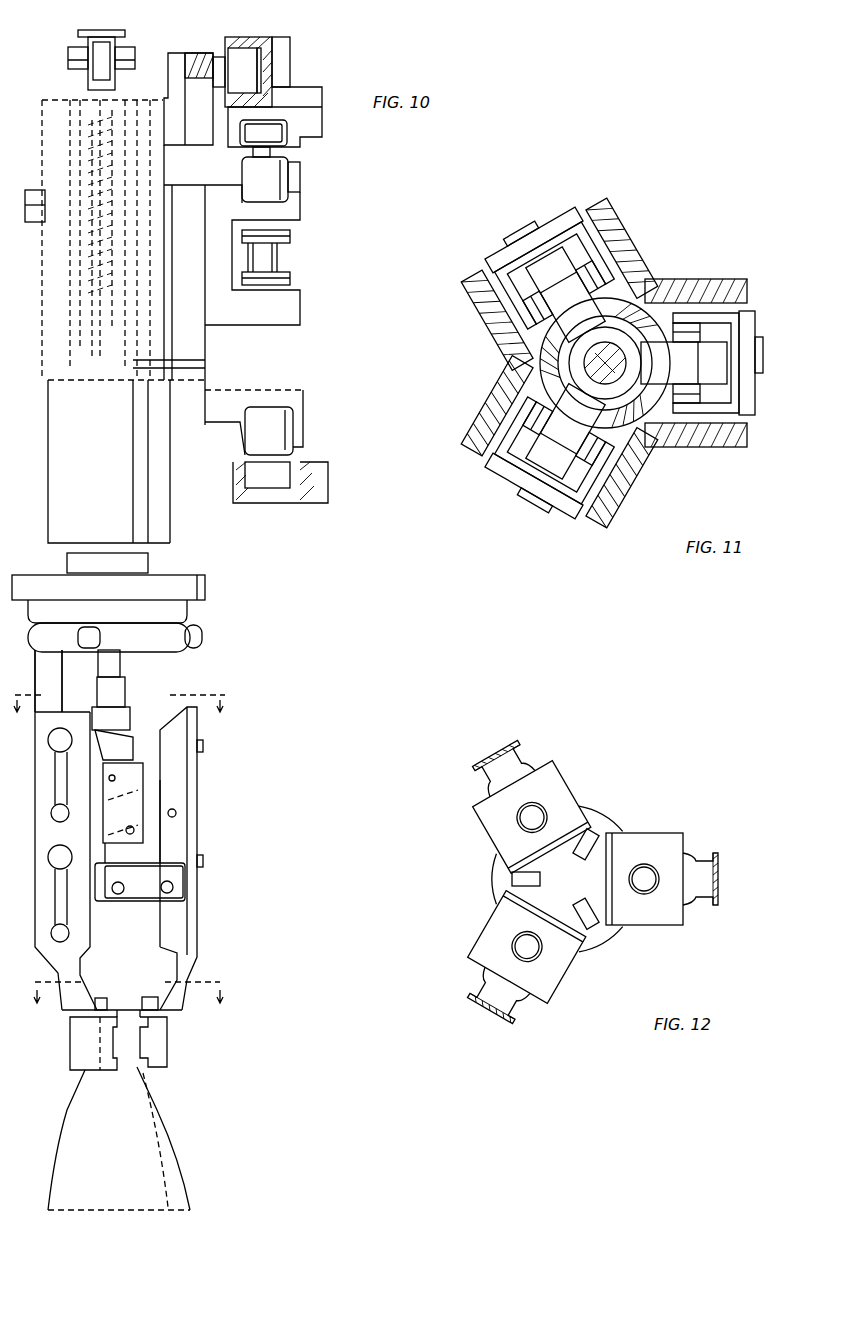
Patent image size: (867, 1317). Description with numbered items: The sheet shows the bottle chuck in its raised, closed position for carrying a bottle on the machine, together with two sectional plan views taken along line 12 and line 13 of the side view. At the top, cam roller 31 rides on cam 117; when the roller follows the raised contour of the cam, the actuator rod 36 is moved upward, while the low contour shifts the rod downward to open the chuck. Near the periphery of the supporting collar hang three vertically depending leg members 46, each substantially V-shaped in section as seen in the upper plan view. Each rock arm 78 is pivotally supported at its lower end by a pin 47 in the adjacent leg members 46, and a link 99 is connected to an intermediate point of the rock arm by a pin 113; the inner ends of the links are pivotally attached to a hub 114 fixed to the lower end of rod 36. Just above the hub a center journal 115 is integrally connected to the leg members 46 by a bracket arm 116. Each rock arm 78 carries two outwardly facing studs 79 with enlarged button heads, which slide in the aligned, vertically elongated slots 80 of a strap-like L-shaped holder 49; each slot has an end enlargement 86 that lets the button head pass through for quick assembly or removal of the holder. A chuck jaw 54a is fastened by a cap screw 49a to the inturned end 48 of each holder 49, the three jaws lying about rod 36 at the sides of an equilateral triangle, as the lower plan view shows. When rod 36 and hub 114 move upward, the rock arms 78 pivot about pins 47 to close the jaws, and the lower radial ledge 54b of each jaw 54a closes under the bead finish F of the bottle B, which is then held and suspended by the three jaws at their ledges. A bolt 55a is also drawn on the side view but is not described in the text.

In FIG. 10, the cam 117 is at (87, 32).
In FIG. 10, the cam roller 31 is at (117, 33).
In FIG. 10, the bolt 55a is at (287, 253).
In FIG. 10, the leg members 46 is at (50, 670).
In FIG. 11, the leg members 46 is at (632, 246).
In FIG. 10, the actuator rod 36 is at (123, 655).
In FIG. 11, the actuator rod 36 is at (625, 362).
In FIG. 10, the bracket arm 116 is at (94, 707).
In FIG. 10, the center journal 115 is at (129, 712).
In FIG. 10, the rock arm 78 is at (170, 752).
In FIG. 11, the rock arm 78 is at (571, 216).
In FIG. 10, the section line 12— 12 is at (121, 715).
In FIG. 10, the studs 79 is at (49, 741).
In FIG. 11, the studs 79 is at (527, 222).
In FIG. 10, the slots 80 is at (55, 790).
In FIG. 10, the end enlargement 86 is at (56, 815).
In FIG. 10, the hub 114 is at (141, 806).
In FIG. 10, the pin 113 is at (176, 813).
In FIG. 10, the link 99 is at (135, 832).
In FIG. 11, the link 99 is at (573, 300).
In FIG. 10, the holder 49 is at (48, 923).
In FIG. 11, the holder 49 is at (497, 252).
In FIG. 12, the holder 49 is at (490, 752).
In FIG. 10, the pin 47 is at (164, 893).
In FIG. 11, the pin 47 is at (698, 307).
In FIG. 10, the cap screw 49a is at (107, 998).
In FIG. 12, the cap screw 49a is at (537, 811).
In FIG. 10, the inturned end 48 is at (118, 1008).
In FIG. 10, the section line 13— 13 is at (128, 1006).
In FIG. 10, the chuck jaws 54a is at (72, 1053).
In FIG. 12, the chuck jaws 54a is at (490, 922).
In FIG. 10, the lower radial ledge 54b is at (117, 1068).
In FIG. 10, the bottle B is at (121, 1183).
In FIG. 12, the bottle B is at (597, 816).
In FIG. 12, the finish F is at (606, 819).